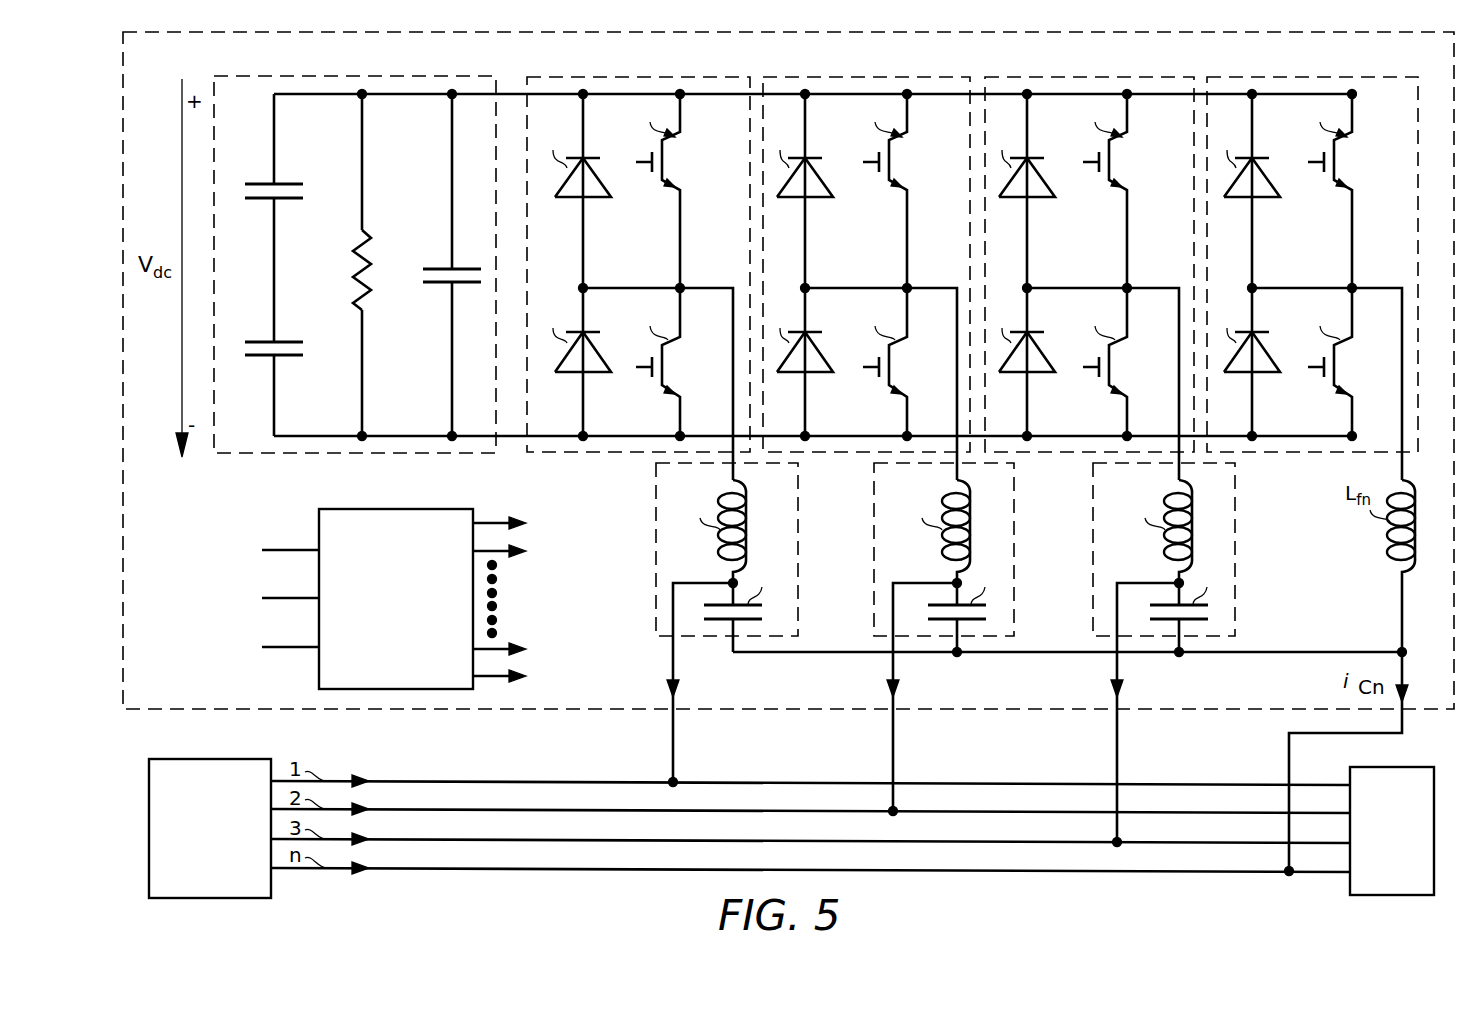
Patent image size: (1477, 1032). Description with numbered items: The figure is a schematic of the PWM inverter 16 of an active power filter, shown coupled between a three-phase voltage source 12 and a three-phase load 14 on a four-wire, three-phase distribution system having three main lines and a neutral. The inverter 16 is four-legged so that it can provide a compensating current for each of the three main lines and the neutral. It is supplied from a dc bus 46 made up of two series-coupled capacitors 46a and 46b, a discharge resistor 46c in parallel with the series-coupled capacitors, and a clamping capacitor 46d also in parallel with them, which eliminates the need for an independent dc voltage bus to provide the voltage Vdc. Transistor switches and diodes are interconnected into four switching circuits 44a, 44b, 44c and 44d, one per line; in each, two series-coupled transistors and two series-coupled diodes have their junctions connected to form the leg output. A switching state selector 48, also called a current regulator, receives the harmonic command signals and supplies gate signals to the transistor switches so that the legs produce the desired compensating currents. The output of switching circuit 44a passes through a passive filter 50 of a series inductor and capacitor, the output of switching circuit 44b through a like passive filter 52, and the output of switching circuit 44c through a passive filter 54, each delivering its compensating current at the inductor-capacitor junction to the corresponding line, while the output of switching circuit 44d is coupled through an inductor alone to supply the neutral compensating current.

The three-phase voltage source 12 is at (149, 808).
The three-phase load 14 is at (1390, 767).
The PWM inverter 16 is at (785, 33).
The switching circuit 44a is at (730, 257).
The switching circuit 44b is at (956, 257).
The switching circuit 44c is at (1180, 257).
The switching circuit 44d is at (1408, 257).
The dc bus 46 is at (370, 76).
The capacitor 46a is at (262, 184).
The capacitor 46b is at (262, 342).
The discharge resistor 46c is at (355, 270).
The clamping capacitor 46d is at (436, 270).
The switching state selector 48 is at (325, 509).
The passive filter 50 is at (656, 525).
The passive filter 52 is at (874, 525).
The passive LC filter 54 is at (1093, 525).